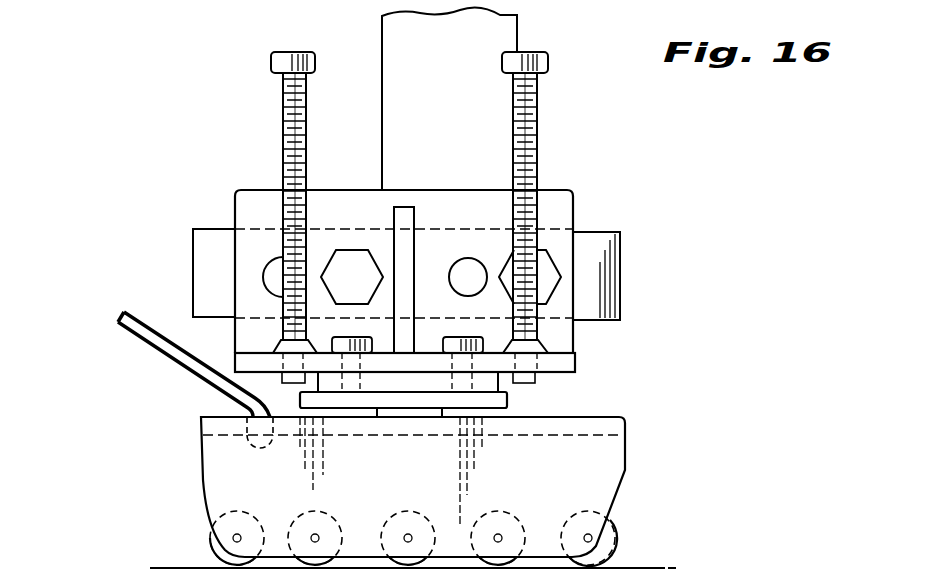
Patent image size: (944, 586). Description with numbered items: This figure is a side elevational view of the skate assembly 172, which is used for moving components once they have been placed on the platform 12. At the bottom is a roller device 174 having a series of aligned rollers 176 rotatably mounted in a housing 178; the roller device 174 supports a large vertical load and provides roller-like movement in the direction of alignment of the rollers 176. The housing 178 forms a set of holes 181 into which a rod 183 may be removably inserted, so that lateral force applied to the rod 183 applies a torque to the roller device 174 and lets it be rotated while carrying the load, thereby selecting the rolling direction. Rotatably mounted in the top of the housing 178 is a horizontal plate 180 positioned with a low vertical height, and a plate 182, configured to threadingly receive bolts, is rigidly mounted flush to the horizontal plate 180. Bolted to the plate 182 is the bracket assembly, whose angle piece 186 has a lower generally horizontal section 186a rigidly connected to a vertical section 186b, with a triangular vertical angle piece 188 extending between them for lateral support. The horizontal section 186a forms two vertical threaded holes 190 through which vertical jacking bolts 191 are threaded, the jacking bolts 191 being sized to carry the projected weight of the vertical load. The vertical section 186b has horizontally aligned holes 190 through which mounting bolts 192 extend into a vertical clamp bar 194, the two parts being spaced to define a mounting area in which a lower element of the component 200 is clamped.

The component 200 is at (520, 35).
The vertical jacking bolt 191 is at (283, 104).
The vertical section 186b is at (235, 203).
The horizontal section 186a is at (578, 367).
The angle piece 186 is at (230, 338).
The triangular vertical angle piece 188 is at (401, 210).
The holes 190 is at (467, 258).
The mounting bolt 192 is at (553, 263).
The vertical clamp bar 194 is at (621, 250).
The plate 182 is at (415, 380).
The horizontal plate 180 is at (507, 397).
The housing 178 is at (626, 470).
The skate assembly 172 is at (622, 414).
The rollers 176 is at (615, 542).
The platform 12 is at (650, 568).
The rod 183 is at (157, 350).
The holes 181 is at (198, 438).
The roller device 174 is at (205, 478).